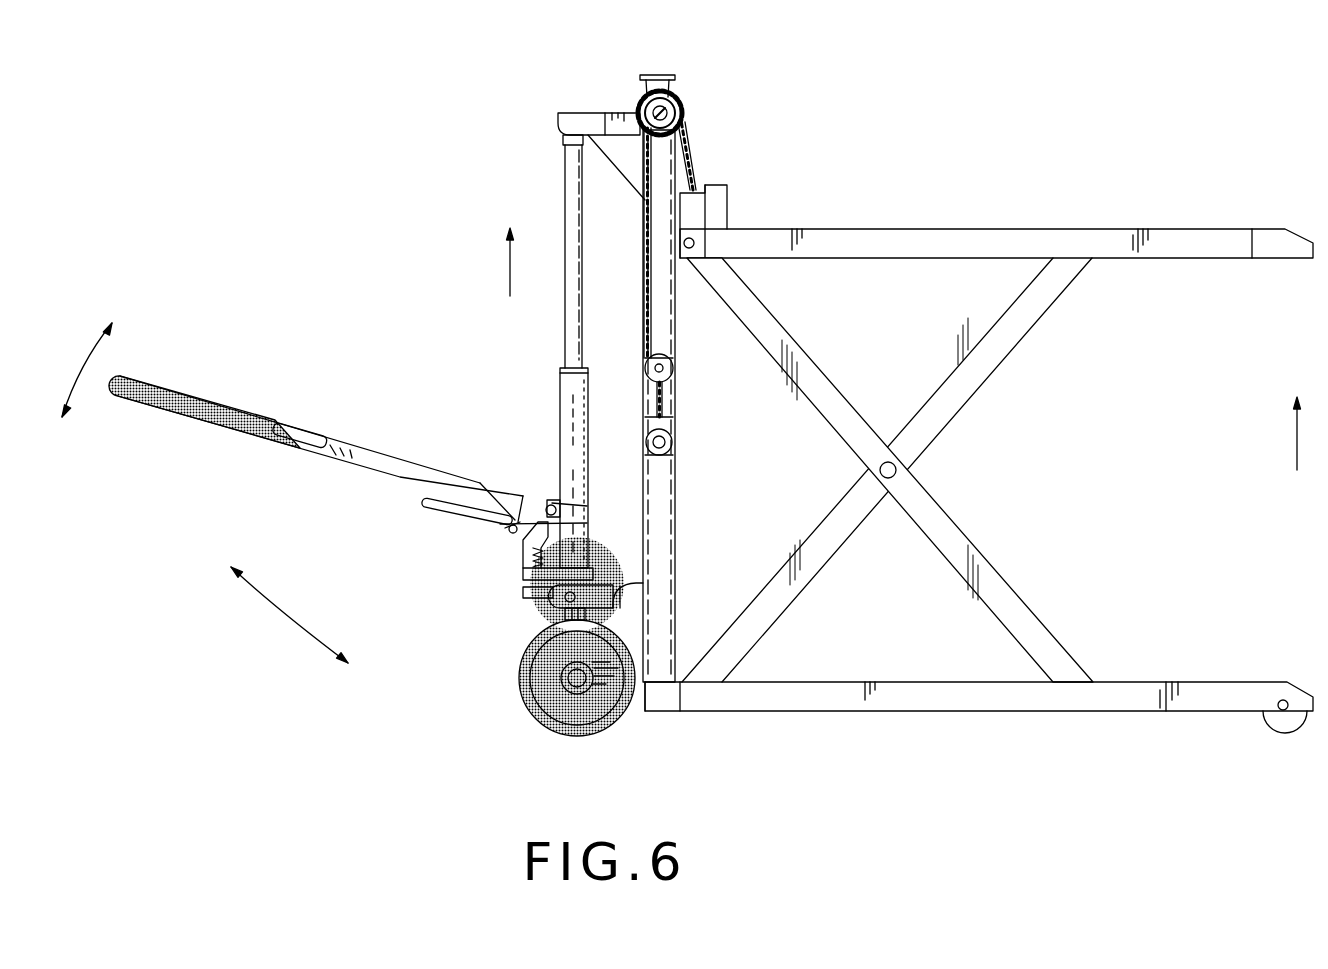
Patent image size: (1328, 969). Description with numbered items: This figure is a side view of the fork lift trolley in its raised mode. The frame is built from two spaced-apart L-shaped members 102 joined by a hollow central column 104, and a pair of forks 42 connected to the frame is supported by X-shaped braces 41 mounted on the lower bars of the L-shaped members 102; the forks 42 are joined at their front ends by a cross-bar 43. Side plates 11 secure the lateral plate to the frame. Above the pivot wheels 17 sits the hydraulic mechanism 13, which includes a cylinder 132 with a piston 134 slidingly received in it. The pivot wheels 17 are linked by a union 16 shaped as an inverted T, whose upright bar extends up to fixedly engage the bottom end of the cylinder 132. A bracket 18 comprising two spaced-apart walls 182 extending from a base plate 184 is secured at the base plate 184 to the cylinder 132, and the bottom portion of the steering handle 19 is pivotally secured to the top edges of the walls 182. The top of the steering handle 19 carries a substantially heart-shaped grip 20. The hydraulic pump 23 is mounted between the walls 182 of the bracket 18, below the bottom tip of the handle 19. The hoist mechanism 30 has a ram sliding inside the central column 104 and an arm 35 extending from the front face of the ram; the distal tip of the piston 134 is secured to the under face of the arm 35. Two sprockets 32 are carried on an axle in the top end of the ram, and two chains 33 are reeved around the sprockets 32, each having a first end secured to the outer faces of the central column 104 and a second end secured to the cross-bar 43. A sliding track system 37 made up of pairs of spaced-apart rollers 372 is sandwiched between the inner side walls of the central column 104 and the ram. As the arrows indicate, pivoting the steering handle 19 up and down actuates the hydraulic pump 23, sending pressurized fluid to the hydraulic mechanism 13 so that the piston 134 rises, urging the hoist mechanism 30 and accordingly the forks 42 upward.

The side plates 11 is at (630, 570).
The hydraulic mechanism 13 is at (557, 330).
The cylinder 132 is at (562, 405).
The piston 134 is at (570, 215).
The arm 35 is at (565, 122).
The hoist mechanism 30 is at (648, 221).
The sprockets 32 is at (668, 97).
The chains 33 is at (648, 195).
The sliding track system 37 is at (720, 423).
The rollers 372 is at (674, 363).
The X-shaped braces 41 is at (975, 505).
The forks 42 is at (1213, 232).
The cross-bar 43 is at (700, 210).
The L-shaped members 102 is at (1203, 703).
The central column 104 is at (1290, 727).
The union 16 is at (540, 618).
The pivot wheels 17 is at (597, 712).
The bracket 18 is at (521, 552).
The walls 182 is at (530, 545).
The base plate 184 is at (527, 574).
The hydraulic pump 23 is at (546, 548).
The steering handle 19 is at (348, 452).
The grip 20 is at (188, 410).